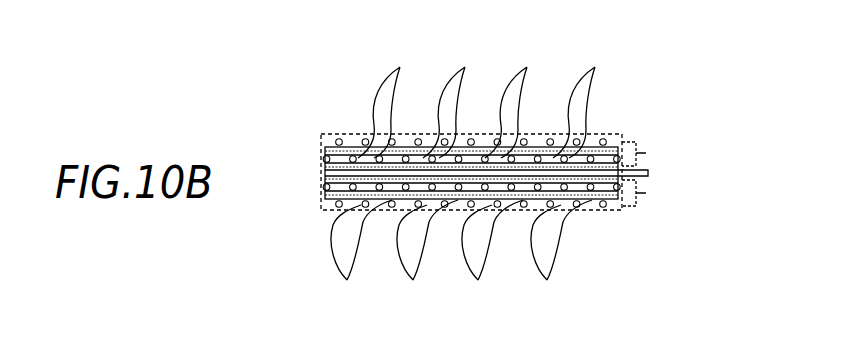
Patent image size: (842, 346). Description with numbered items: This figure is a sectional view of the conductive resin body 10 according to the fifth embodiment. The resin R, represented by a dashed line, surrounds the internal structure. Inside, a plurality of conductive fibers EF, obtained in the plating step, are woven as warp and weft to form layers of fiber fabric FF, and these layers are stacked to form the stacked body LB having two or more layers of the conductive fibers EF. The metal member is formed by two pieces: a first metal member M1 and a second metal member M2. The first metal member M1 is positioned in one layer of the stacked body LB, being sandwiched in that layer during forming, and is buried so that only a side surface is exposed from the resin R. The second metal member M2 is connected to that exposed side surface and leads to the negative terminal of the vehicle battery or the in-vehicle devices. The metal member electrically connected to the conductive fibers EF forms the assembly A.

The conductive resin body 10 is at (633, 64).
The resin R is at (343, 134).
The conductive fibers EF is at (472, 175).
The first metal member M1 is at (315, 207).
The stacked body LB is at (325, 168).
The second metal member M2 is at (648, 173).
The fiber fabric FF is at (652, 173).
The assembly A is at (613, 219).